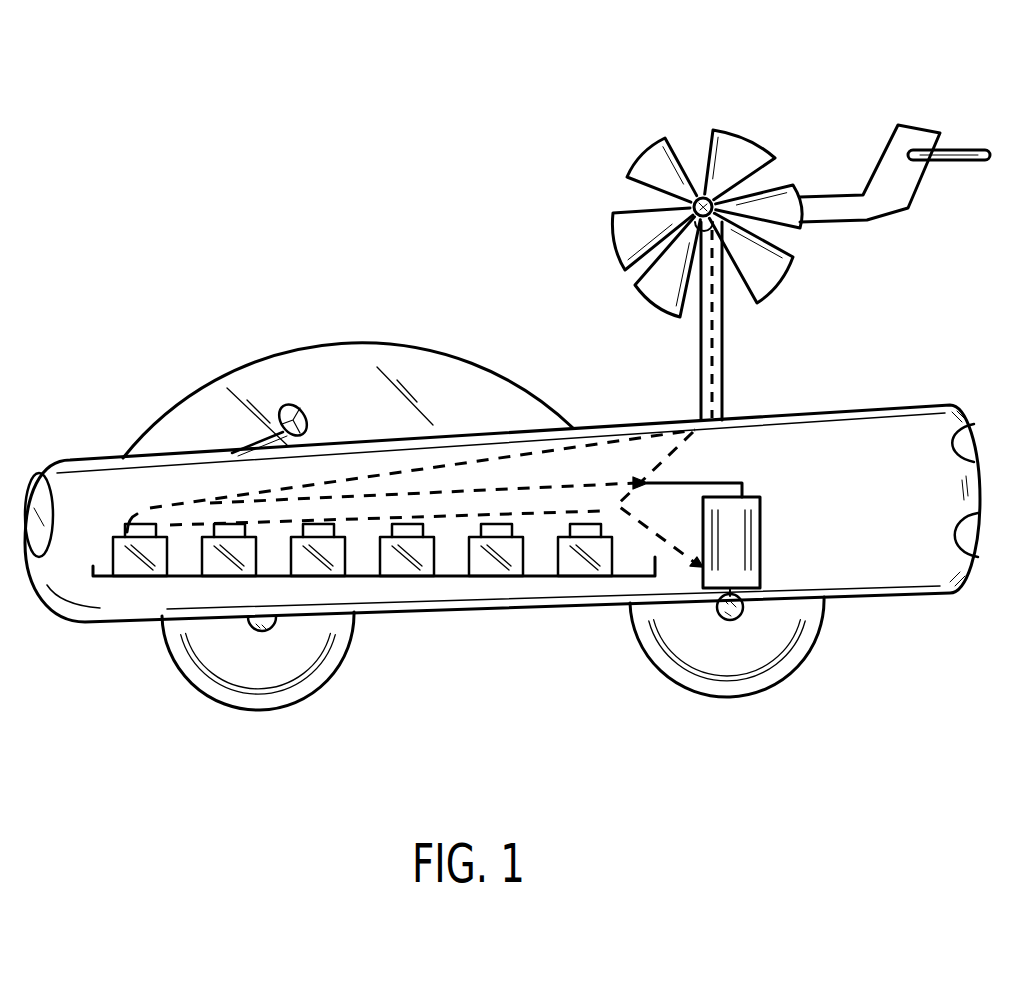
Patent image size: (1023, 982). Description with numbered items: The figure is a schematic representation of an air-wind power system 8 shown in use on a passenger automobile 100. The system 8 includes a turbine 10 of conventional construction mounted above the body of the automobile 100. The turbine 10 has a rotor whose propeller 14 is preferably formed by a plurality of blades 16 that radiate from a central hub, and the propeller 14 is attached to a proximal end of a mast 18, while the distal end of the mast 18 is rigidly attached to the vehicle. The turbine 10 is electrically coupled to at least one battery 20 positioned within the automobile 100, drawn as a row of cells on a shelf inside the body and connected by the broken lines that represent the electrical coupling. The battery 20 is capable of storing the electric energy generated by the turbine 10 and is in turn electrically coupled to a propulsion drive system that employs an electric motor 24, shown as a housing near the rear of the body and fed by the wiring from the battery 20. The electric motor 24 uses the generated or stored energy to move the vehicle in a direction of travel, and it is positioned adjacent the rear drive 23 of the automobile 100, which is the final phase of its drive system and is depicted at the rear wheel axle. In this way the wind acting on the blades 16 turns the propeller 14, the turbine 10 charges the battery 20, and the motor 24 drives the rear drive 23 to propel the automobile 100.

The air-wind power system 8 is at (89, 347).
The turbine 10 is at (800, 108).
The propeller 14 is at (643, 153).
The blades 16 is at (617, 222).
The mast 18 is at (701, 389).
The battery 20 is at (110, 592).
The rear drive 23 is at (730, 618).
The electric motor 24 is at (742, 530).
The passenger automobile 100 is at (492, 608).